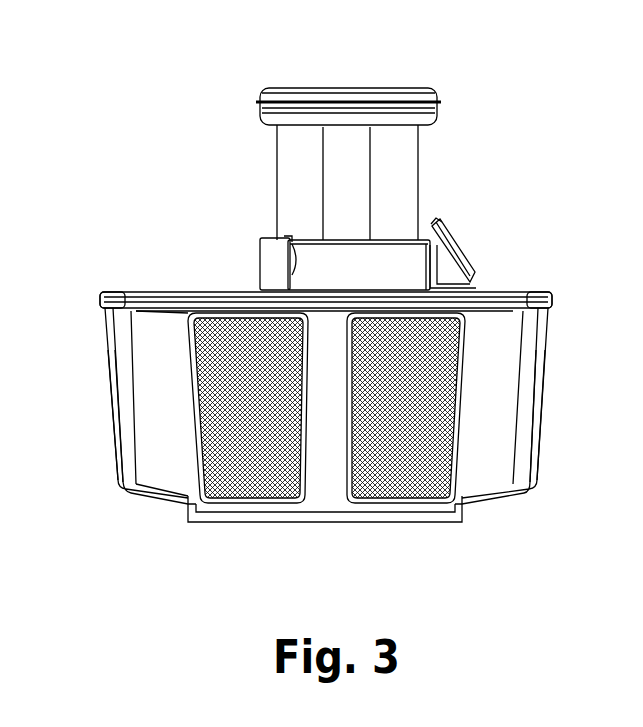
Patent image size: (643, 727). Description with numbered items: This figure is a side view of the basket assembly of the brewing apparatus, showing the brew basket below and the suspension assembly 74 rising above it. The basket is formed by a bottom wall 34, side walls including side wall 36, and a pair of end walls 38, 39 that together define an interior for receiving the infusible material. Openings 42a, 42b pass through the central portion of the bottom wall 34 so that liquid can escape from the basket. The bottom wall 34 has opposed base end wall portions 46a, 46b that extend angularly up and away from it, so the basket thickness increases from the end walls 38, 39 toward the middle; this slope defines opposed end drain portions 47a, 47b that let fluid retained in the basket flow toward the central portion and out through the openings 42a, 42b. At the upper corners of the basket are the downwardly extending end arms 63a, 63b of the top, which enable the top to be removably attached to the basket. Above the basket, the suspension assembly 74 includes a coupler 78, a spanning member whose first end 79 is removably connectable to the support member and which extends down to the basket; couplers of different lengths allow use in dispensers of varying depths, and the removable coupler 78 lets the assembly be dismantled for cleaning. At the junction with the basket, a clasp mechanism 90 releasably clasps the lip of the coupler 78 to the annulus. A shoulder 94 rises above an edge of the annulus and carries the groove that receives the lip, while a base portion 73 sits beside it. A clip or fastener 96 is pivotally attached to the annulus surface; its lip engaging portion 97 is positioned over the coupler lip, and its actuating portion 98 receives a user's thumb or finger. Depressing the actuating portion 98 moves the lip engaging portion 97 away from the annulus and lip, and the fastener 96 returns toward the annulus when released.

The bottom wall 34 is at (283, 522).
The side wall 36 is at (165, 460).
The end wall 38 is at (105, 376).
The end wall 39 is at (548, 376).
The opening 42a is at (255, 490).
The opening 42b is at (402, 490).
The base end wall portion 46a is at (130, 490).
The base end wall portion 46b is at (490, 500).
The end drain portion 47a is at (110, 458).
The end drain portion 47b is at (545, 458).
The end arm 63a is at (100, 299).
The end arm 63b is at (556, 299).
The base block 73 is at (288, 278).
The suspension assembly 74 is at (388, 145).
The coupler 78 is at (277, 195).
The first end 79 is at (440, 93).
The clasp mechanism 90 is at (501, 225).
The shoulder 94 is at (262, 240).
The fastener 96 is at (455, 245).
The lip engaging portion 97 is at (433, 221).
The actuating portion 98 is at (470, 278).